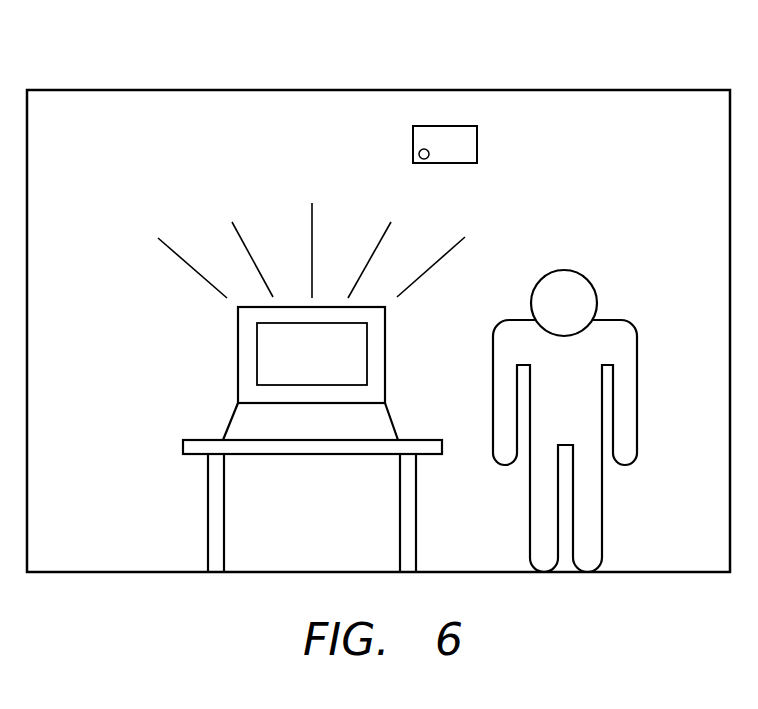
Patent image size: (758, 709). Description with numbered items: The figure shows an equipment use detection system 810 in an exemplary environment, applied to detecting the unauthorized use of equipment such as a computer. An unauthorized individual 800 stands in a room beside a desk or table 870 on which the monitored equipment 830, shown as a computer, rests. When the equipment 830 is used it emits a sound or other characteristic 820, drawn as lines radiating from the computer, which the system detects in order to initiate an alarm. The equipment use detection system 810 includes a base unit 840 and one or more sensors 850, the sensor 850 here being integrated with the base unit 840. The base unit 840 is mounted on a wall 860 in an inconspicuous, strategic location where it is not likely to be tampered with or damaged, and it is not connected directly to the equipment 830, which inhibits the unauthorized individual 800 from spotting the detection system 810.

The unauthorized individual 800 is at (609, 238).
The equipment use detection system 810 is at (456, 107).
The sound or other characteristic 820 is at (171, 213).
The equipment 830 is at (224, 386).
The base unit 840 is at (465, 177).
The sensor 850 is at (419, 154).
The wall 860 is at (634, 105).
The desk or table 870 is at (182, 448).